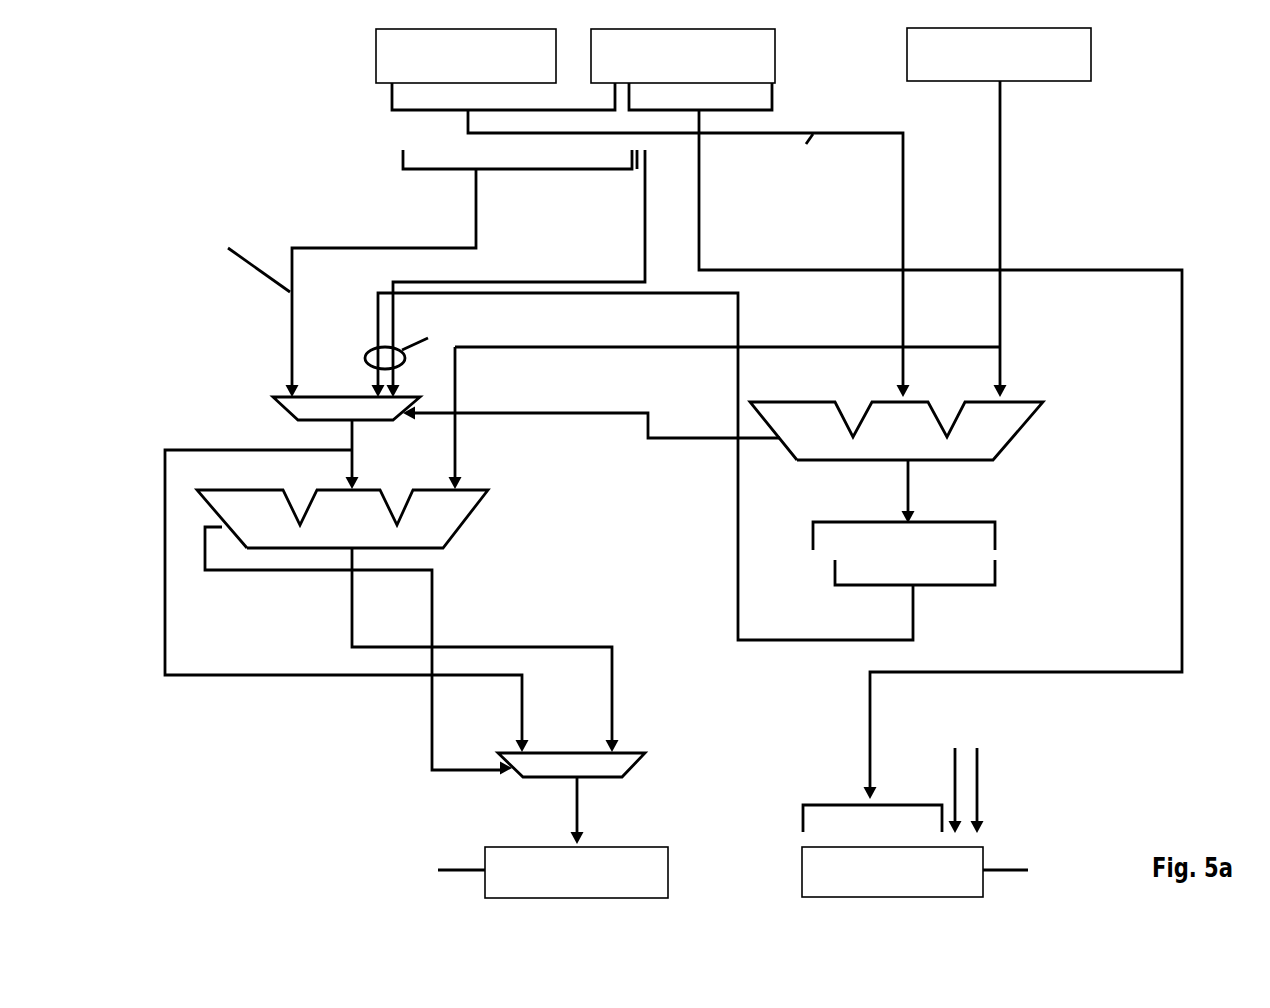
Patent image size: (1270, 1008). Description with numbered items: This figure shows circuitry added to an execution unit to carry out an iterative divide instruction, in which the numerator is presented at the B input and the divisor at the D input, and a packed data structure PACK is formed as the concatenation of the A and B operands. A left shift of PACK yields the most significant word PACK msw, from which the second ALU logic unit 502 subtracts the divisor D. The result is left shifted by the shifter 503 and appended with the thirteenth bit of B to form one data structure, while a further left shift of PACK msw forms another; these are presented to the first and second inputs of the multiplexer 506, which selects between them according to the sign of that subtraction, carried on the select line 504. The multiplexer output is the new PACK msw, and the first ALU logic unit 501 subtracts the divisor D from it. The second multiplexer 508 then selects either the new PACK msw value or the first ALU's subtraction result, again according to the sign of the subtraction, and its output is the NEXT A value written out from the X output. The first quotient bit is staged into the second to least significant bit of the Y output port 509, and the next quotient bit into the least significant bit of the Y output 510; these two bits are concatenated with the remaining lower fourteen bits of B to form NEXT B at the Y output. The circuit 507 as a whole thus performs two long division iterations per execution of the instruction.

The first ALU logic unit 501 is at (486, 493).
The second ALU logic unit 502 is at (1010, 415).
The left shifter 503 is at (1018, 515).
The add/subtract select signal 504 is at (595, 413).
The multiplexer 506 is at (278, 398).
The division iteration circuit 507 is at (668, 463).
The second multiplexer 508 is at (622, 777).
The second to least significant bit of the Y output port 509 is at (953, 779).
The least significant bit of the Y output 510 is at (980, 782).